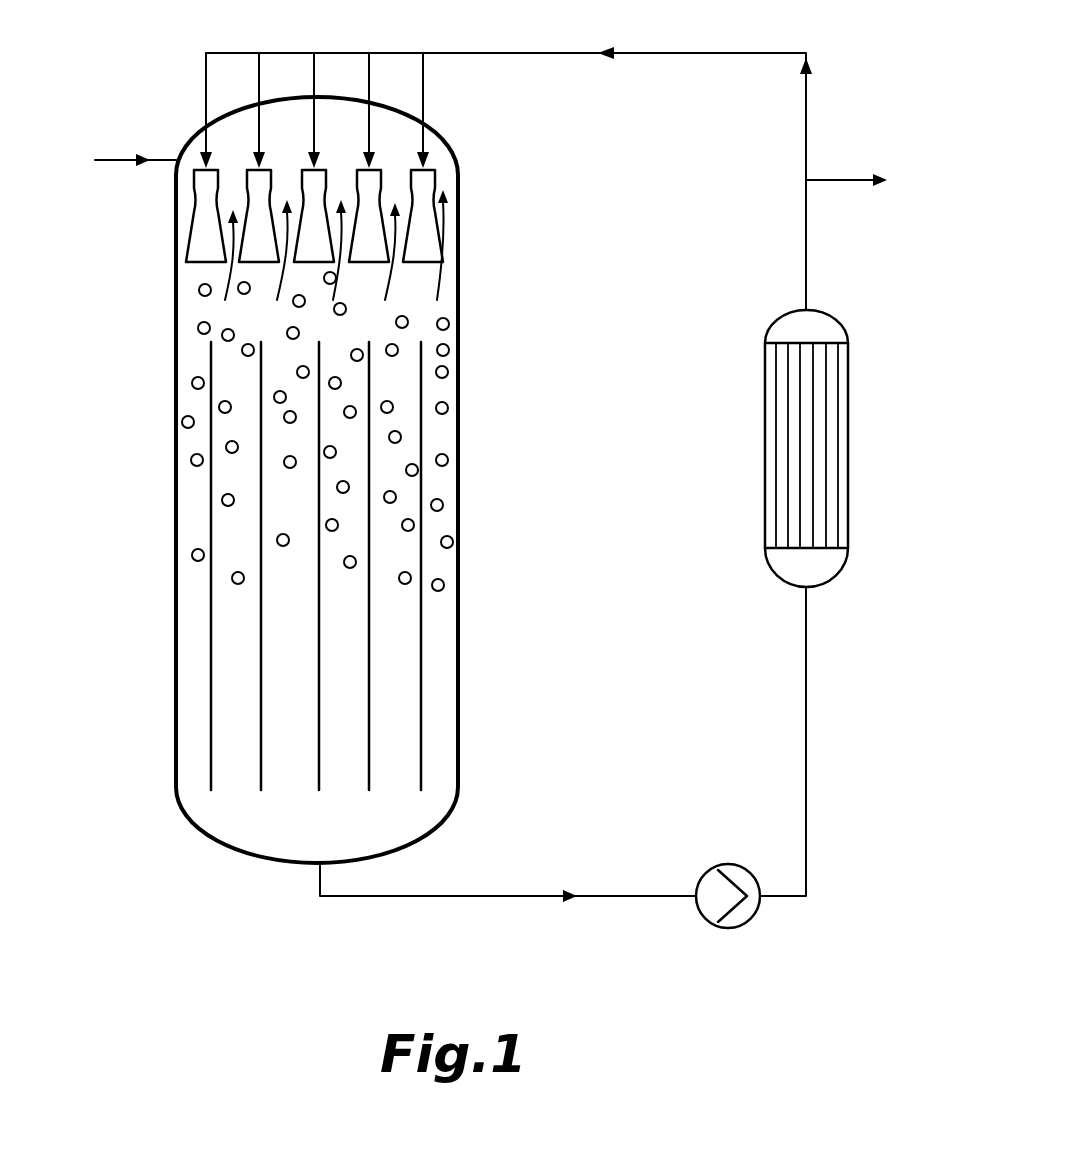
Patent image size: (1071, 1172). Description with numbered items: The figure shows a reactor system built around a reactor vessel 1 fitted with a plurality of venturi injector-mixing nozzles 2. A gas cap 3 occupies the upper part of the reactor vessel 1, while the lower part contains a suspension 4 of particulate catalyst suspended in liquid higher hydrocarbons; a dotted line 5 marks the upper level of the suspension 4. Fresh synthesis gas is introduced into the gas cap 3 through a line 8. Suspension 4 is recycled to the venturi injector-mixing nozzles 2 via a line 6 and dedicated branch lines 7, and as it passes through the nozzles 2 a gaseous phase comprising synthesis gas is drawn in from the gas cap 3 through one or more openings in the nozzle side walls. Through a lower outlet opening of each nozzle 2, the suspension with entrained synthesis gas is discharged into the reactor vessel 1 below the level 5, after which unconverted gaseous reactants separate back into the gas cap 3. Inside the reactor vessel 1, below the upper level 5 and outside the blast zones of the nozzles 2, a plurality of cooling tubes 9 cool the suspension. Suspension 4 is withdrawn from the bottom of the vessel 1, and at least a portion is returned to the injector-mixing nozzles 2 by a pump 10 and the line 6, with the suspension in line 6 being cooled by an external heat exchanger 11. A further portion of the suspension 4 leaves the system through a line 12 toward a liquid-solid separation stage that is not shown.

The reactor vessel 1 is at (460, 422).
The venturi injector-mixing nozzles 2 is at (257, 207).
The gas cap 3 is at (397, 147).
The suspension 4 is at (192, 732).
The upper level of the suspension 5 is at (183, 242).
The line 6 is at (695, 53).
The branch lines 7 is at (370, 62).
The line 8 is at (115, 160).
The cooling tubes 9 is at (370, 650).
The pump 10 is at (703, 920).
The external heat exchanger 11 is at (850, 443).
The line 12 is at (840, 180).